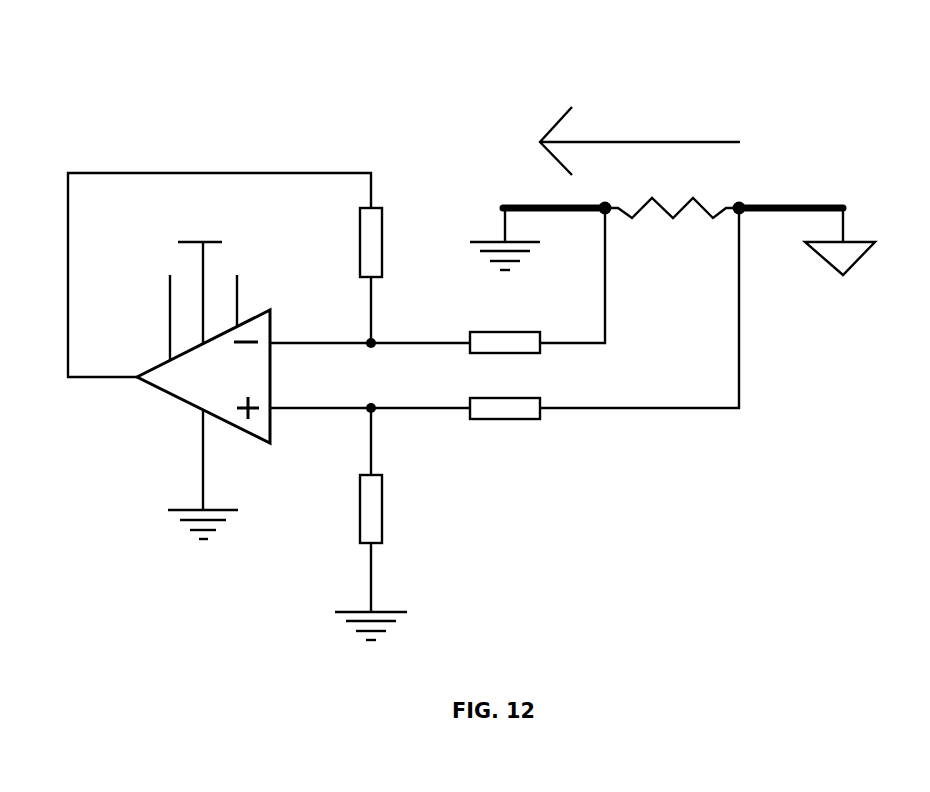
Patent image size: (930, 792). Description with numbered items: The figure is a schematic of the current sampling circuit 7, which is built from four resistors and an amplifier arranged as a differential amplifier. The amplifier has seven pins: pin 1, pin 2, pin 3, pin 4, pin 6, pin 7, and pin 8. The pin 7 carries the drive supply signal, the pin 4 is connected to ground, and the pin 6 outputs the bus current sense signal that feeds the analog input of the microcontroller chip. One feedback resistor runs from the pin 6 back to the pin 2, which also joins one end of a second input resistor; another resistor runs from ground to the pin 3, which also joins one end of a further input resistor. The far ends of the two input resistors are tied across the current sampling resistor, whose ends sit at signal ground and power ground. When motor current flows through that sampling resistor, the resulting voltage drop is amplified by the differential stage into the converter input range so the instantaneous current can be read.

The current sampling circuit 7 is at (415, 168).
The pin 6 is at (219, 275).
The pin 2 is at (370, 329).
The pin 3 is at (370, 395).
The pin 4 is at (189, 460).
The pin 8 is at (155, 317).
The pin 1 is at (223, 301).